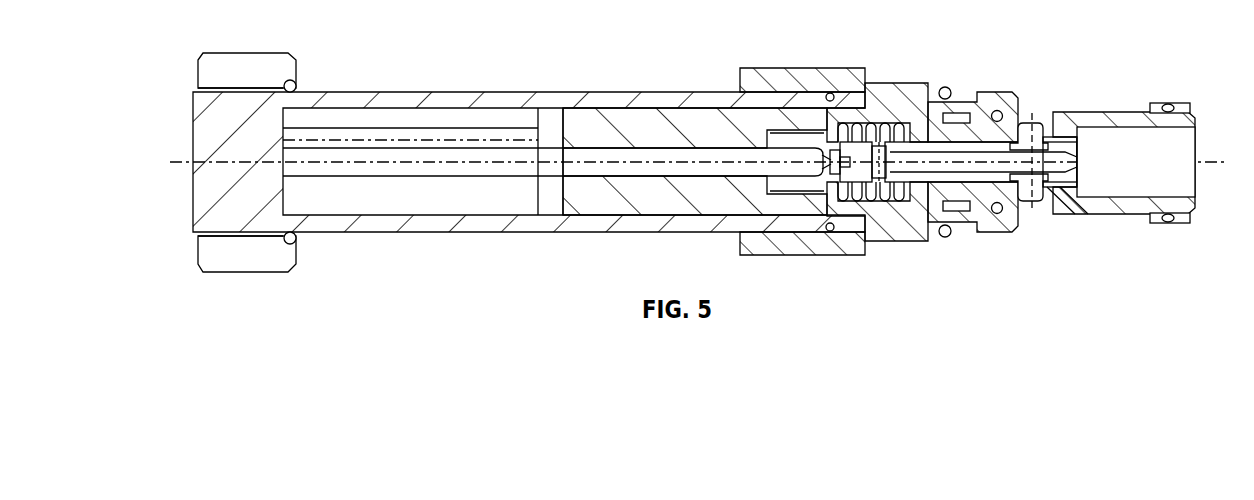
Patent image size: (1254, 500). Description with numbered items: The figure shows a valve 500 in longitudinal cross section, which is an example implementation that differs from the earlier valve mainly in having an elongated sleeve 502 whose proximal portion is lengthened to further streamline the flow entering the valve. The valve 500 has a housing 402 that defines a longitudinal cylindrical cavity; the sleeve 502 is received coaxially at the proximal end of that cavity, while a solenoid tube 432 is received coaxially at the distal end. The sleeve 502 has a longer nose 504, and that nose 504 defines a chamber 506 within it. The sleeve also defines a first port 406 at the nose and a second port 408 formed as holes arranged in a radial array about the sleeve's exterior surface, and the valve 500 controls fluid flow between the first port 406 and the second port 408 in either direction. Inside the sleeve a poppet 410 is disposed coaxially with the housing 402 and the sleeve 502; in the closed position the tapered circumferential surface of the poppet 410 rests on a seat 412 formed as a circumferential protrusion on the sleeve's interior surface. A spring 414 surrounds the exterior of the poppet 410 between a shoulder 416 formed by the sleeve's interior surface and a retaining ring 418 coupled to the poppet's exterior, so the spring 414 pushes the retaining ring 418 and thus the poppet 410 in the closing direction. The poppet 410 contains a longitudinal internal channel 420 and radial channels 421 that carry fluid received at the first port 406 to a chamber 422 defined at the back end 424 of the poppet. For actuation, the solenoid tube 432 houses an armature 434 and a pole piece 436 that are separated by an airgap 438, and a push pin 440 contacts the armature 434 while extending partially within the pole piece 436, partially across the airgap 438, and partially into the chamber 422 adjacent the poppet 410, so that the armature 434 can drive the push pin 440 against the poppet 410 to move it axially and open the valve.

The valve 500 is at (230, 30).
The housing 402 is at (740, 80).
The first port 406 is at (1200, 147).
The second port 408 is at (1036, 117).
The poppet 410 is at (1063, 182).
The seat 412 is at (1050, 205).
The spring 414 is at (875, 120).
The shoulder 416 is at (917, 127).
The retaining ring 418 is at (842, 124).
The longitudinal internal channel 420 is at (924, 174).
The radial channels 421 is at (882, 176).
The chamber 422 is at (822, 182).
The back end 424 is at (795, 192).
The solenoid tube 432 is at (396, 103).
The armature 434 is at (428, 124).
The pole piece 436 is at (666, 120).
The airgap 438 is at (553, 116).
The push pin 440 is at (697, 155).
The elongated sleeve 502 is at (1031, 114).
The nose 504 is at (1110, 120).
The chamber 506 is at (1117, 180).